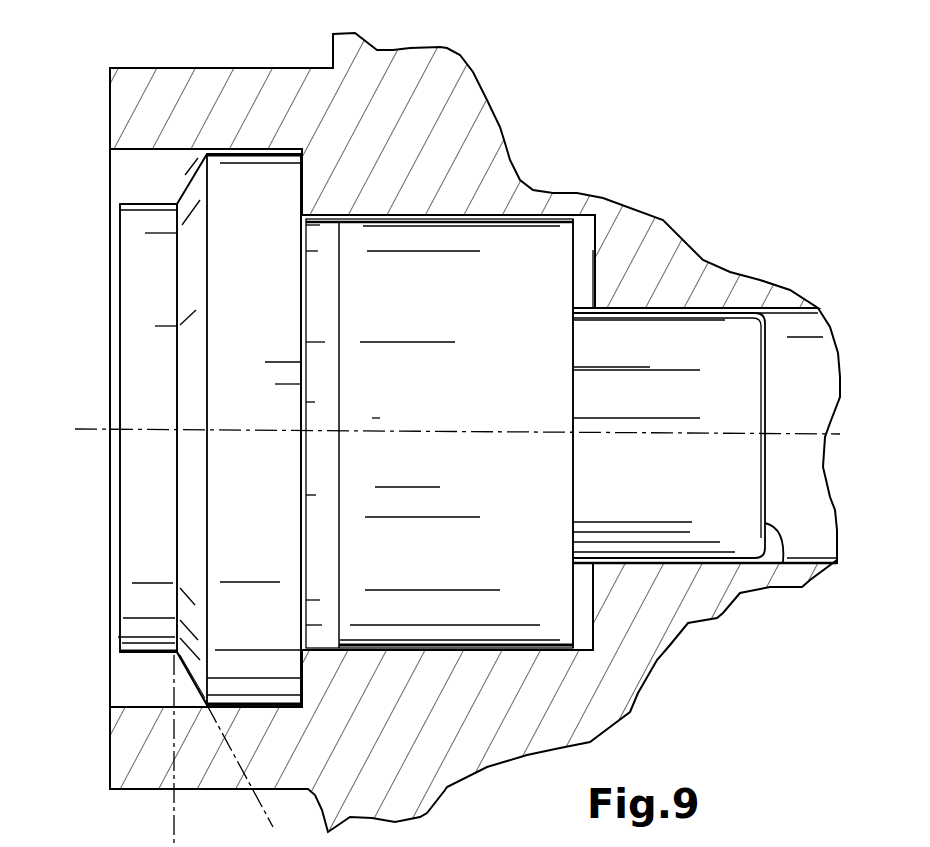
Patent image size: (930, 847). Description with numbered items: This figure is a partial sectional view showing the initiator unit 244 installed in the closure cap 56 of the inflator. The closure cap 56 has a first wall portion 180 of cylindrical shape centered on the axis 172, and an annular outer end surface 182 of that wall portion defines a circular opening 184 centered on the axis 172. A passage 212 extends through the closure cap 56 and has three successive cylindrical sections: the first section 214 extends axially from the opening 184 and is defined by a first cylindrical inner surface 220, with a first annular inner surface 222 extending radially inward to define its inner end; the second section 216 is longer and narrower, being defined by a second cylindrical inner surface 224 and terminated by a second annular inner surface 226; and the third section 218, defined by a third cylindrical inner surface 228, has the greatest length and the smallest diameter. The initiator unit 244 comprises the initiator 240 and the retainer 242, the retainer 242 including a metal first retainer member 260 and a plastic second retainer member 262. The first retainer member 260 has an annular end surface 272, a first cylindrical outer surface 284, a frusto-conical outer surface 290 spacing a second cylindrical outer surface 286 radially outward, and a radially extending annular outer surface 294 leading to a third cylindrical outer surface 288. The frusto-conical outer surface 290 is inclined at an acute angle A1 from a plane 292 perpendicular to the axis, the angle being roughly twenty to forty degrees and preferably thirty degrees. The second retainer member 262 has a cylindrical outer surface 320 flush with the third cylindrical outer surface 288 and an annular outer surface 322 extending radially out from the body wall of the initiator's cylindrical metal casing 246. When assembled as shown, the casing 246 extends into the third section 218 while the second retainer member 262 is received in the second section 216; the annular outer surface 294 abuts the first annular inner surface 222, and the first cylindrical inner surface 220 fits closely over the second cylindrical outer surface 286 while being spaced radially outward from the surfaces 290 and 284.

The closure cap 56 is at (326, 44).
The first wall portion 180 is at (180, 98).
The annular outer end surface 182 is at (110, 88).
The circular opening 184 is at (114, 167).
The second cylindrical outer surface 286 is at (265, 148).
The radially extending annular outer surface 294 is at (312, 173).
The third cylindrical outer surface 288 is at (332, 217).
The cylindrical outer surface 320 is at (532, 220).
The second retainer member 262 is at (598, 216).
The annular outer surface 322 is at (573, 273).
The annular end surface 272 is at (117, 584).
The initiator unit 244 is at (92, 327).
The retainer 242 is at (112, 371).
The first retainer member 260 is at (140, 238).
The first cylindrical outer surface 284 is at (145, 205).
The frusto-conical outer surface 290 is at (192, 273).
The first section 214 is at (271, 629).
The first cylindrical inner surface 220 is at (233, 157).
The first annular inner surface 222 is at (300, 178).
The passage 212 is at (519, 395).
The second section 216 is at (489, 553).
The second cylindrical inner surface 224 is at (483, 652).
The second annular inner surface 226 is at (592, 245).
The third section 218 is at (824, 520).
The initiator 240 is at (774, 334).
The cylindrical metal casing 246 is at (720, 377).
The third cylindrical inner surface 228 is at (757, 527).
The axis 172 is at (84, 430).
The plane 292 is at (173, 812).
The acute angle A1 is at (258, 808).